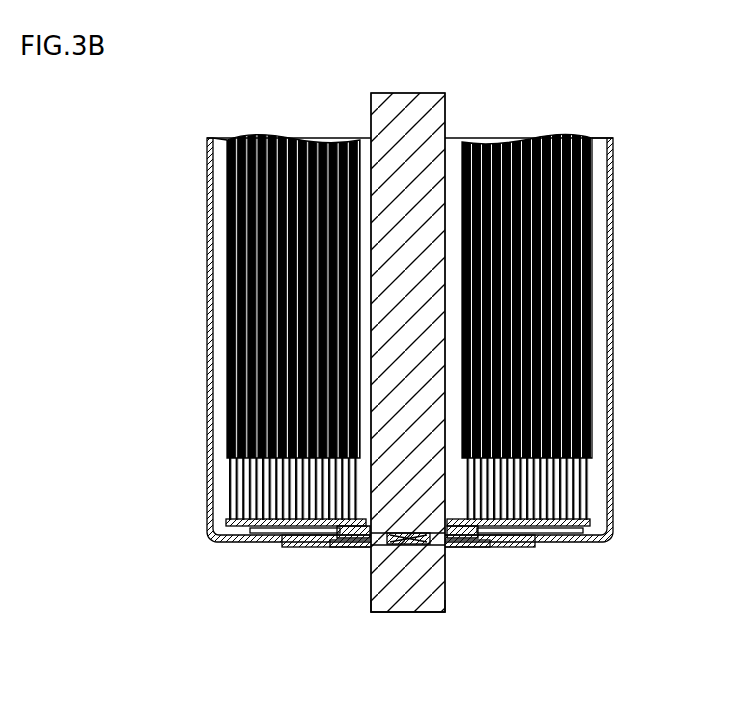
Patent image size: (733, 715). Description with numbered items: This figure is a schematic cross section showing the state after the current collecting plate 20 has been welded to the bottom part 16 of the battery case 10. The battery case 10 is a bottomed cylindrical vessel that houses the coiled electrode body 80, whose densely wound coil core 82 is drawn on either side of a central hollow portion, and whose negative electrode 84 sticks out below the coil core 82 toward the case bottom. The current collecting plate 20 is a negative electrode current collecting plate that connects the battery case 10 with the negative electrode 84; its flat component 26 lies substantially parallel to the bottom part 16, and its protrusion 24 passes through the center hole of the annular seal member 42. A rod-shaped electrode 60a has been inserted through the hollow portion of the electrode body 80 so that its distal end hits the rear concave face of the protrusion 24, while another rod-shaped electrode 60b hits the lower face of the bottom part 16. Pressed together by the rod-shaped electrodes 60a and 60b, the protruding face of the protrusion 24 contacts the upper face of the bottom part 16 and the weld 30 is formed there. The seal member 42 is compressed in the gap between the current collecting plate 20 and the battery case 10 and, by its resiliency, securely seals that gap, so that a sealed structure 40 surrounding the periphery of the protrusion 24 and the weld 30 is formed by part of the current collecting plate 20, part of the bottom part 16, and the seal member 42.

The battery case 10 is at (615, 337).
The bottom part of the battery case 16 is at (528, 548).
The current collecting plate 20 is at (580, 541).
The protrusion 24 is at (387, 547).
The flat component 26 is at (250, 541).
The weld 30 is at (410, 548).
The sealed structure 40 is at (362, 549).
The seal member 42 is at (343, 545).
The rod-shaped electrode 60a is at (440, 123).
The rod-shaped electrode 60b is at (434, 607).
The electrode body 80 is at (444, 296).
The coil core 82 is at (590, 233).
The negative electrode 84 is at (590, 470).